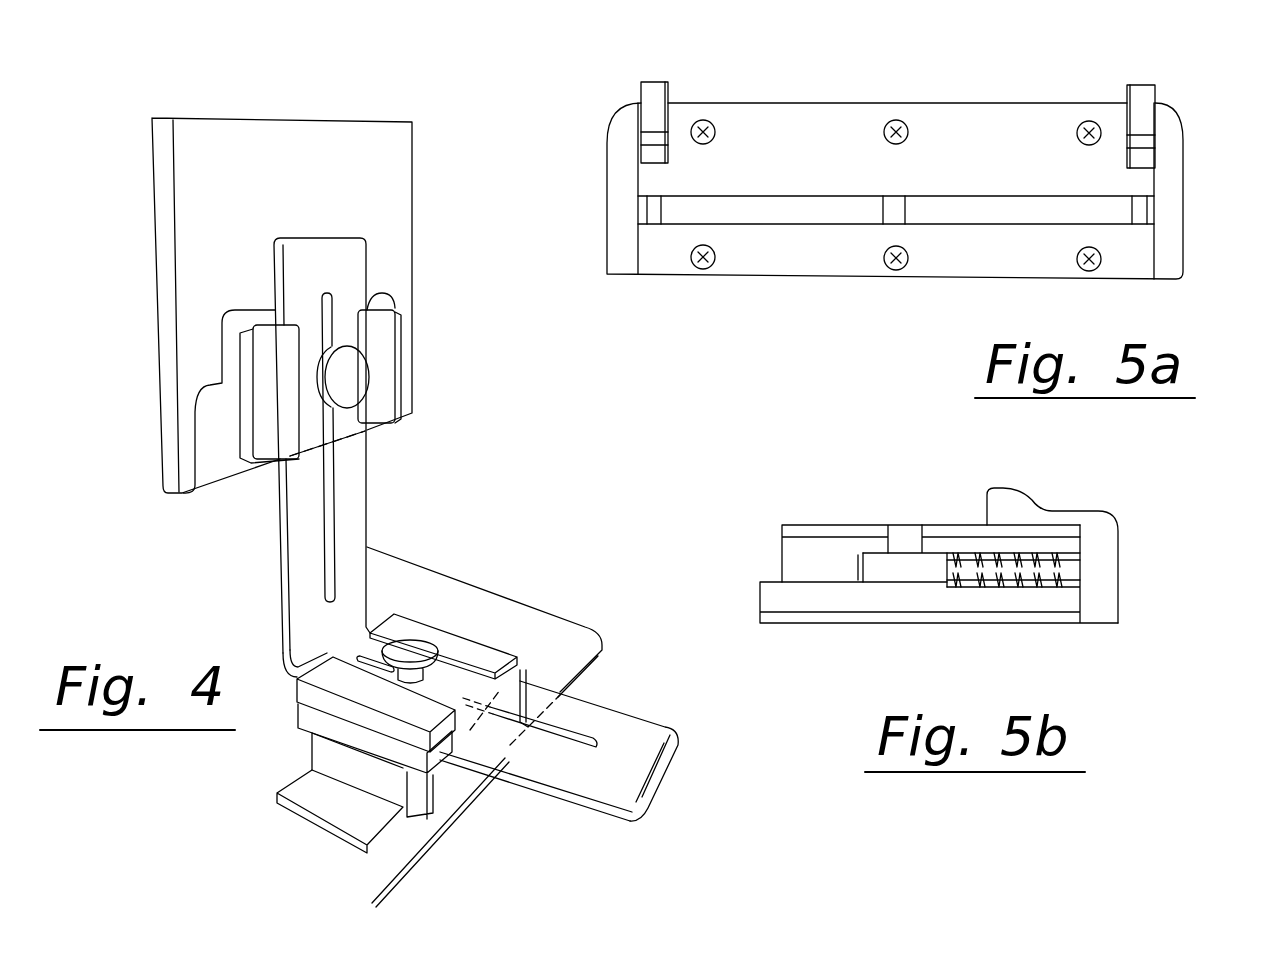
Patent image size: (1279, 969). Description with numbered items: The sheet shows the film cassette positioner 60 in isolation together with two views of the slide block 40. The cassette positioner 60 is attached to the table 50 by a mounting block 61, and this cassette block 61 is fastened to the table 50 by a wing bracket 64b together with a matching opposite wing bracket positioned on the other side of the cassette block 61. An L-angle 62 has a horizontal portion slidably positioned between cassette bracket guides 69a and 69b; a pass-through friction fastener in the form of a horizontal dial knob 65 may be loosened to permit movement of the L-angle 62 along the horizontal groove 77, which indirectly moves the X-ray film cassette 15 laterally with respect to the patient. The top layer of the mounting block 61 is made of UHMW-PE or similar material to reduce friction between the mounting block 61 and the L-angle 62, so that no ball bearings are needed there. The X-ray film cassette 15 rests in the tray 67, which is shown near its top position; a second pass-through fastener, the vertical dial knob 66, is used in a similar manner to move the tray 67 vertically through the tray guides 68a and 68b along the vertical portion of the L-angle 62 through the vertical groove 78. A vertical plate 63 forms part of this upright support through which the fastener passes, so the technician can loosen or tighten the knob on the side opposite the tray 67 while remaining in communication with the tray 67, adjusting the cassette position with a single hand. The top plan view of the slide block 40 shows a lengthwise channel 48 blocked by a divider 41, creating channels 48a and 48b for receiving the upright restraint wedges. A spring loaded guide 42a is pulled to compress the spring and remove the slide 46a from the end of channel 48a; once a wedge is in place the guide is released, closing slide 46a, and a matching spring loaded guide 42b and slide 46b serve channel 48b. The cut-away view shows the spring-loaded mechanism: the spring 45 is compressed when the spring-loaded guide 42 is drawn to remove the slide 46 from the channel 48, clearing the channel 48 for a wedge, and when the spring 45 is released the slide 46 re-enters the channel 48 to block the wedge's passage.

In FIG. 4, the X-ray film cassette 15 is at (152, 228).
In FIG. 4, the film positioner 60 is at (326, 95).
In FIG. 4, the mounting block 61 is at (423, 793).
In FIG. 4, the L-angle 62 is at (615, 787).
In FIG. 4, the vertical bracket plate 63 is at (295, 252).
In FIG. 4, the wing bracket 64b is at (327, 802).
In FIG. 4, the horizontal dial knob 65 is at (403, 640).
In FIG. 4, the vertical dial knob 66 is at (357, 372).
In FIG. 4, the tray 67 is at (205, 438).
In FIG. 4, the tray guide 68a is at (387, 327).
In FIG. 4, the tray guide 68b is at (262, 377).
In FIG. 4, the cassette bracket guide 69a is at (455, 645).
In FIG. 4, the cassette bracket guide 69b is at (347, 678).
In FIG. 4, the horizontal groove 77 is at (588, 732).
In FIG. 4, the vertical groove 78 is at (332, 292).
In FIG. 4, the table 50 is at (572, 625).
In FIG. 5A, the slide block 40 is at (892, 181).
In FIG. 5B, the slide block 40 is at (928, 555).
In FIG. 5A, the divider 41 is at (907, 210).
In FIG. 5A, the spring loaded guide 42a is at (648, 92).
In FIG. 5A, the spring loaded guide 42b is at (1145, 108).
In FIG. 5A, the slide 46a is at (647, 212).
In FIG. 5A, the slide 46b is at (1147, 213).
In FIG. 5A, the channel 48a is at (803, 212).
In FIG. 5A, the channel 48b is at (988, 213).
In FIG. 5B, the spring-loaded guide 42 is at (1013, 498).
In FIG. 5B, the spring 45 is at (1033, 590).
In FIG. 5B, the slide 46 is at (897, 577).
In FIG. 5B, the lengthwise channel 48 is at (908, 540).